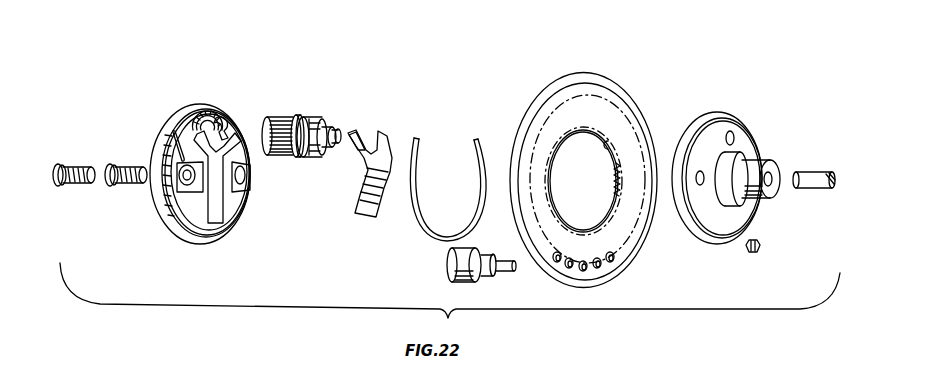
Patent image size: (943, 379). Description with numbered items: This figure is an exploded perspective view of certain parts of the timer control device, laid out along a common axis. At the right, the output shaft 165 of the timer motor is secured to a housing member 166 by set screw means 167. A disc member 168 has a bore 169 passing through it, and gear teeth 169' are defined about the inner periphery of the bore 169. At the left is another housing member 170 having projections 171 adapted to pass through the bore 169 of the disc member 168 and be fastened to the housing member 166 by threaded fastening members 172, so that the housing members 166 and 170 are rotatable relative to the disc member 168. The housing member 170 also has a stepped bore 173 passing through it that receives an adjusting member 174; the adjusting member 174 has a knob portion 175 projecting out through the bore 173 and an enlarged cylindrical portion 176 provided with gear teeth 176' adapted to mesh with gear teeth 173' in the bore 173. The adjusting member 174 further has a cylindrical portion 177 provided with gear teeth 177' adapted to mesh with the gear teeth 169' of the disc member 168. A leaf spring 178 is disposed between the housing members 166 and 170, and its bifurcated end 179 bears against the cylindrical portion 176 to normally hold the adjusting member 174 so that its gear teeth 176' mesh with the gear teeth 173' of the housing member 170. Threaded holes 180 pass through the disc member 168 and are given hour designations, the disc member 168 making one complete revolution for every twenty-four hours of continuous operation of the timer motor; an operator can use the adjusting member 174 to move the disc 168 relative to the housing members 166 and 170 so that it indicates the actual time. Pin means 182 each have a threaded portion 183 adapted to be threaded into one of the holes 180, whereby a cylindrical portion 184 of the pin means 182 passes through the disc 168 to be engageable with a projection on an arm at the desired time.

The output shaft 165 is at (815, 178).
The housing member 166 is at (747, 137).
The set screw means 167 is at (762, 246).
The disc member 168 is at (590, 78).
The bore 169 is at (644, 125).
The gear teeth 169' is at (594, 186).
The housing member 170 is at (162, 140).
The projections 171 is at (246, 150).
The threaded fastening members 172 is at (128, 172).
The stepped bore 173 is at (207, 100).
The gear teeth 173' is at (243, 120).
The adjusting member 174 is at (291, 114).
The knob portion 175 is at (274, 117).
The enlarged cylindrical portion 176 is at (340, 121).
The gear teeth 176' is at (328, 111).
The cylindrical portion 177 is at (338, 158).
The gear teeth 177' is at (324, 170).
The leaf spring 178 is at (386, 158).
The bifurcated end 179 is at (367, 129).
The threaded holes 180 is at (600, 266).
The pin means 182 is at (452, 265).
The threaded portion 183 is at (492, 262).
The cylindrical portion 184 is at (505, 270).